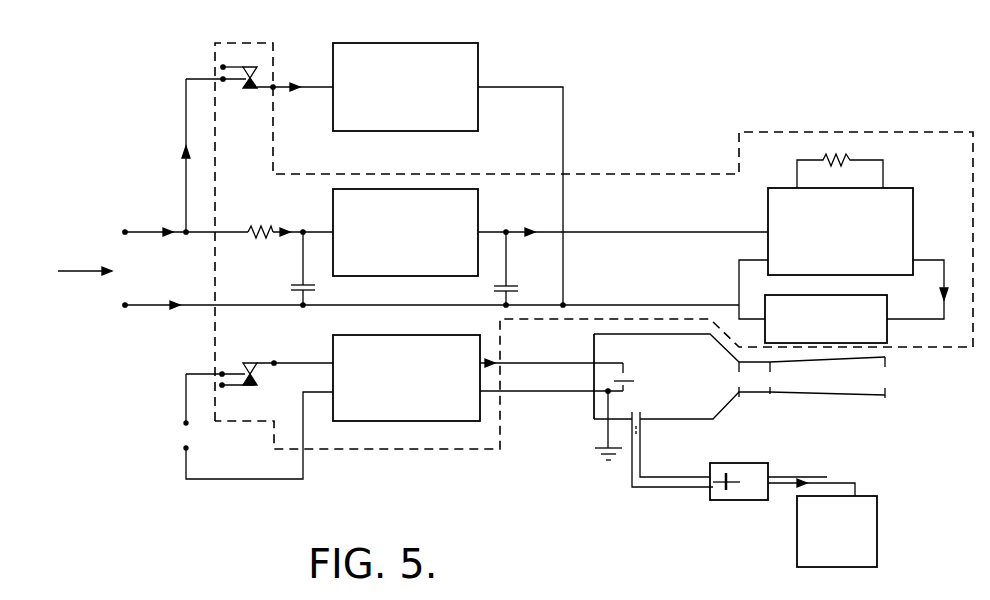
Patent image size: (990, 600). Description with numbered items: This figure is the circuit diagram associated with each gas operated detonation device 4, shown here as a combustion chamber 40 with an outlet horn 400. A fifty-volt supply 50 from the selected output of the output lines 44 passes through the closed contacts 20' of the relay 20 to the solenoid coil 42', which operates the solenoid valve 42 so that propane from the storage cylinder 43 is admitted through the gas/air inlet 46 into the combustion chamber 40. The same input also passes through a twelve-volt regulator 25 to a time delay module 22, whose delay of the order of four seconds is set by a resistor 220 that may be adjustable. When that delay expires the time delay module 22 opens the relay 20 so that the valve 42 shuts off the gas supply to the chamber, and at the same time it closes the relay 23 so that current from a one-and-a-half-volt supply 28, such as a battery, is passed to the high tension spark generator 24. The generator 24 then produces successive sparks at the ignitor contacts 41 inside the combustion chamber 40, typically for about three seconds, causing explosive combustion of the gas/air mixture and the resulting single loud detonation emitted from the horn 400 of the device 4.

The output lines 44 is at (80, 258).
The positive supply line 50 is at (228, 236).
The closed contacts of the relay 20' is at (259, 50).
The solenoid coil 42' is at (448, 157).
The voltage regulator 25 is at (442, 200).
The relay 23 is at (235, 370).
The 1.5-Volt supply 28 is at (185, 425).
The high tension generator 24 is at (420, 347).
The time delay module 22 is at (892, 215).
The resistor 220 is at (867, 160).
The relay 20 is at (843, 316).
The gas operated detonation device 4 is at (668, 330).
The combustion chamber 40 is at (607, 347).
The ignitor or spark plug 41 is at (627, 383).
The outlet opening or horn 400 is at (838, 397).
The gas/air inlet 46 is at (640, 427).
The solenoid operated control valve 42 is at (782, 497).
The storage container or cylinder 43 is at (868, 505).